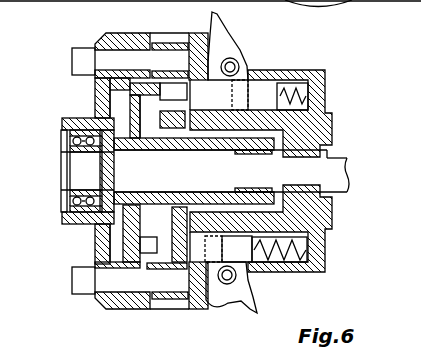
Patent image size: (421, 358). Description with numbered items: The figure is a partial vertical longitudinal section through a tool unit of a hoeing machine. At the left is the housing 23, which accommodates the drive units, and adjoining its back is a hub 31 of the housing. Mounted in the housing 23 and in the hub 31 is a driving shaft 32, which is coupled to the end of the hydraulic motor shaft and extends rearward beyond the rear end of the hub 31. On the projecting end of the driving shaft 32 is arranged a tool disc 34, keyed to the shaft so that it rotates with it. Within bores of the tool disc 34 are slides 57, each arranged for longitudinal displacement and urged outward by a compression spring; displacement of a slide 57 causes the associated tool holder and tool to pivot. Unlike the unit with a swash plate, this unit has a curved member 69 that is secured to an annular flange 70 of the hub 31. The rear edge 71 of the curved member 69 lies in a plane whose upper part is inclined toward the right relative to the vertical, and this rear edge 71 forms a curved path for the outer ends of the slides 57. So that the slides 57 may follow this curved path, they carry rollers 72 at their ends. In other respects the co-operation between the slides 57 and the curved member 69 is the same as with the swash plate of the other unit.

The housing 23 is at (100, 100).
The hub 31 is at (172, 207).
The driving shaft 32 is at (318, 185).
The tool disc 34 is at (327, 81).
The slide 57 is at (262, 90).
The curved member 69 is at (113, 90).
The annular flange 70 is at (100, 226).
The rear edge 71 is at (205, 127).
The roller 72 is at (141, 48).